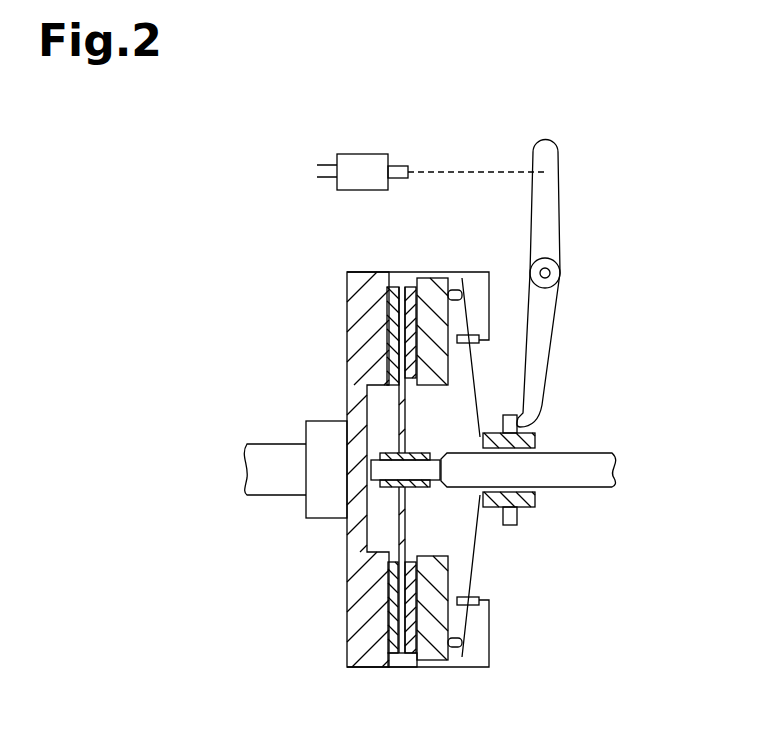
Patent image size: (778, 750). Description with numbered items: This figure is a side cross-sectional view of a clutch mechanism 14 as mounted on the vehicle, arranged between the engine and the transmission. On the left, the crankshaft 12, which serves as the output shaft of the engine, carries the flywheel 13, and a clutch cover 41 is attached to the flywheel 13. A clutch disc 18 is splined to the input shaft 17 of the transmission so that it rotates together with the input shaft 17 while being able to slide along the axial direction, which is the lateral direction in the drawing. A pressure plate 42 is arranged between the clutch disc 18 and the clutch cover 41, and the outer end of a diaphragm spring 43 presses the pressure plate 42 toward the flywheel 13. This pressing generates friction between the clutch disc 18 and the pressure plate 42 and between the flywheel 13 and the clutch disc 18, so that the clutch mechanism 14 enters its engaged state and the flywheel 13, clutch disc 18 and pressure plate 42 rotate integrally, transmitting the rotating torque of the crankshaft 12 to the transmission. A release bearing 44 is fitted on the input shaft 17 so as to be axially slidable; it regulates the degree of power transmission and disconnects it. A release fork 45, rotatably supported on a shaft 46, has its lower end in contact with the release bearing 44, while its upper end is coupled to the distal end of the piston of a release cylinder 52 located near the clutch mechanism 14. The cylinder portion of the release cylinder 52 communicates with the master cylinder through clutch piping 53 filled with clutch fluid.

The crankshaft 12 is at (276, 478).
The flywheel 13 is at (370, 647).
The clutch mechanism 14 is at (233, 315).
The input shaft 17 is at (590, 478).
The clutch disc 18 is at (393, 653).
The clutch cover 41 is at (472, 667).
The pressure plate 42 is at (443, 648).
The diaphragm spring 43 is at (473, 562).
The release bearing 44 is at (527, 498).
The release fork 45 is at (535, 392).
The shaft 46 is at (556, 270).
The release cylinder 52 is at (400, 165).
The clutch piping 53 is at (362, 192).